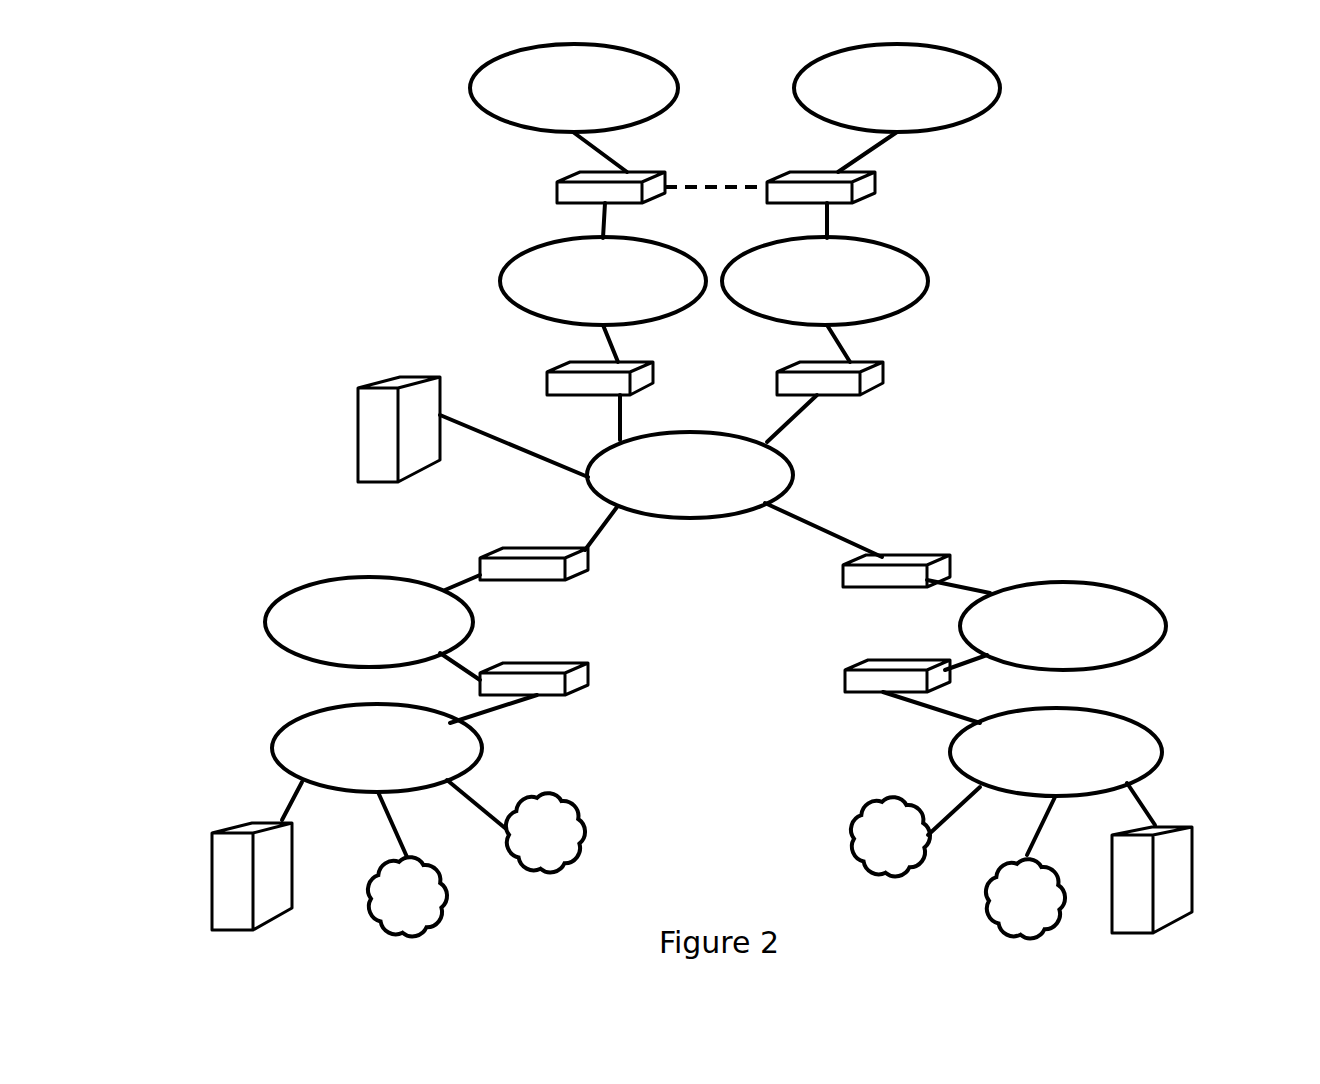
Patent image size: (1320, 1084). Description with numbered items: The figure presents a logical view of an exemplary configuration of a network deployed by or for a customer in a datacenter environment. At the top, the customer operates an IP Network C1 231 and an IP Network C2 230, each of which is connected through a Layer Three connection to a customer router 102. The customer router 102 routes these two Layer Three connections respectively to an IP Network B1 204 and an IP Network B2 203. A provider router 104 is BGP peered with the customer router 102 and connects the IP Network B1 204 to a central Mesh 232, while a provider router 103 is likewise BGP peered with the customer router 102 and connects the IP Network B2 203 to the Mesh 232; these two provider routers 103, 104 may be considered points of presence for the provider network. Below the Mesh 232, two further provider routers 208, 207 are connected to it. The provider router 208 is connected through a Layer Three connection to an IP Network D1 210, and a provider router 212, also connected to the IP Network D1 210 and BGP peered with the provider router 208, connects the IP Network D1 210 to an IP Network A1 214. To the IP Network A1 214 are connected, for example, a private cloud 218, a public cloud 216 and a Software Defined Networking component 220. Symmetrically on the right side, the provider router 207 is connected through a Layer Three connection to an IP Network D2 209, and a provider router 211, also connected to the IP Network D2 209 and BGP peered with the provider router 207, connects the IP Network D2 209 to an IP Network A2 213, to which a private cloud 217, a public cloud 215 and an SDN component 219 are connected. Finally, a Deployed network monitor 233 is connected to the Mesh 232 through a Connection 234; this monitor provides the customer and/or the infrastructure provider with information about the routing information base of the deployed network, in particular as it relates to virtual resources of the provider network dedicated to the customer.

The customer router 102 is at (875, 185).
The provider router 103 is at (883, 375).
The provider router 104 is at (653, 375).
The IP Network B2 203 is at (928, 283).
The IP Network B1 204 is at (500, 281).
The provider router 207 is at (843, 572).
The provider router 208 is at (590, 565).
The IP Network D2 209 is at (1060, 580).
The IP Network D1 210 is at (368, 577).
The provider router 211 is at (845, 678).
The provider router 212 is at (590, 678).
The IP Network A2 213 is at (953, 740).
The IP Network A1 214 is at (483, 738).
The public cloud 215 is at (845, 838).
The public cloud 216 is at (588, 833).
The private cloud 217 is at (980, 900).
The private cloud 218 is at (450, 893).
The SDN component 219 is at (1195, 843).
The SDN component 220 is at (207, 848).
The IP Network C2 230 is at (1000, 90).
The IP Network C1 231 is at (678, 90).
The Mesh 232 is at (793, 470).
The Deployed network monitor 233 is at (356, 437).
The Connection 234 is at (528, 443).